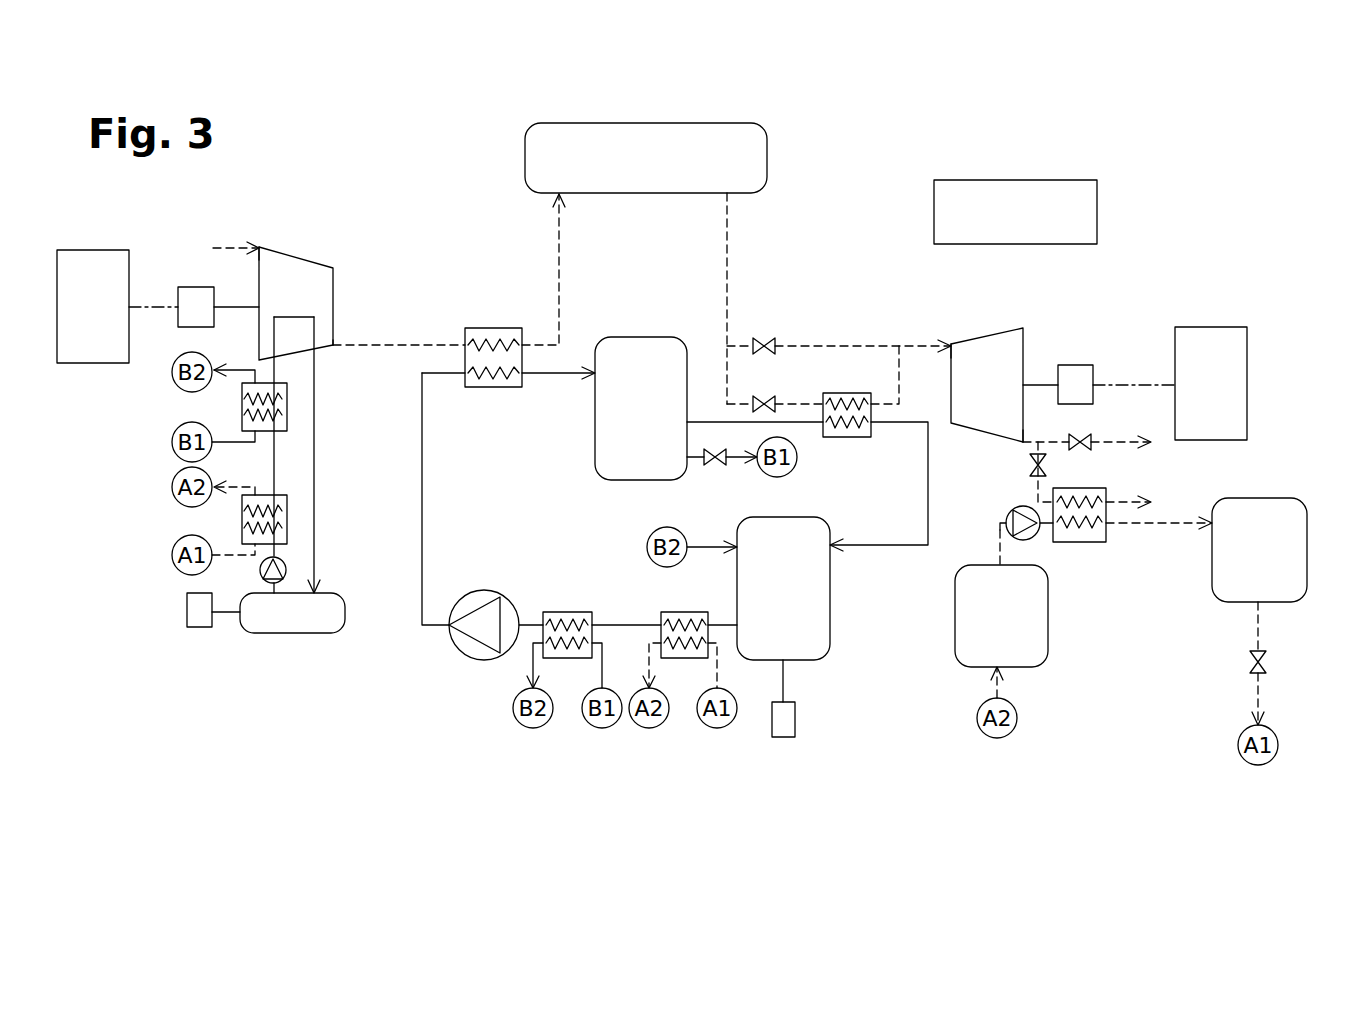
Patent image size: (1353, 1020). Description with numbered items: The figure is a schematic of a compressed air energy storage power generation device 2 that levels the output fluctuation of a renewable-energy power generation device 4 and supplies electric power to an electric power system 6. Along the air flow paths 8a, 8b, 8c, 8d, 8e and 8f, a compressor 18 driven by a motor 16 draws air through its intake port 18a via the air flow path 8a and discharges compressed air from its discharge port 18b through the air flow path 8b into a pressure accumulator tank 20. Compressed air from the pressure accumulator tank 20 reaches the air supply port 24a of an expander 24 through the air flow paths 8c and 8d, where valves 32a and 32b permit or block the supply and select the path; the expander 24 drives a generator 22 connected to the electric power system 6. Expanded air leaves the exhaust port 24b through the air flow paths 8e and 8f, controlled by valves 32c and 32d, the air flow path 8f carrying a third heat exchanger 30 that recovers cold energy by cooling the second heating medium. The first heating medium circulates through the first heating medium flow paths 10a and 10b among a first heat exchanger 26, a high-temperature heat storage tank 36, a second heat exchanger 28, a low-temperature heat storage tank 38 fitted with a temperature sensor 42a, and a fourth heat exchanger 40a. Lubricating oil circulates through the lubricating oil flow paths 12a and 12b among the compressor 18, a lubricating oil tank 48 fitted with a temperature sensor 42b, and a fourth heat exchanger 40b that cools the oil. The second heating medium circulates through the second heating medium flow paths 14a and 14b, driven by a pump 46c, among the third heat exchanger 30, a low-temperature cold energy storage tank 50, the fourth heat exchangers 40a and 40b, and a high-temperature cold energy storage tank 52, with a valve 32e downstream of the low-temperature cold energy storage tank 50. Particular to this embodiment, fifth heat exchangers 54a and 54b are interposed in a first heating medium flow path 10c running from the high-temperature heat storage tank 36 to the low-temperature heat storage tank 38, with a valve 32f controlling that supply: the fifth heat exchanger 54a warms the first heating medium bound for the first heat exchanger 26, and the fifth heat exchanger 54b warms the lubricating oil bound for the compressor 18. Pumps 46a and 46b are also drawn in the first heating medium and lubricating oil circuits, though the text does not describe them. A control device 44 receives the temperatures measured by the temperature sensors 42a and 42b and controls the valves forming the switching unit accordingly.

The compressed air energy storage power generation device 2 is at (310, 165).
The power generation device 4 is at (68, 363).
The electric power system 6 is at (1210, 327).
The air flow path 8a is at (236, 246).
The air flow path 8b is at (559, 278).
The air flow path 8c is at (840, 346).
The air flow path 8d is at (899, 372).
The air flow path 8e is at (1108, 442).
The air flow path 8f is at (1125, 502).
The first heating medium flow path 10a is at (625, 625).
The first heating medium flow path 10b is at (928, 490).
The first heating medium flow path 10c is at (237, 442).
The lubricating oil flow path 12a is at (275, 470).
The lubricating oil flow path 12b is at (315, 430).
The second heating medium flow path 14a is at (1148, 528).
The second heating medium flow path 14b is at (233, 556).
The motor 16 is at (195, 327).
The compressor 18 is at (305, 262).
The intake port 18a is at (262, 247).
The discharge port 18b is at (338, 345).
The pressure accumulator tank 20 is at (767, 152).
The generator 22 is at (1078, 365).
The expander 24 is at (985, 332).
The air supply port 24a is at (955, 345).
The exhaust port 24b is at (1018, 440).
The first heat exchanger 26 is at (500, 387).
The second heat exchanger 28 is at (832, 437).
The third heat exchanger 30 is at (1086, 542).
The valve 32a is at (762, 337).
The valve 32b is at (762, 396).
The valve 32c is at (1082, 434).
The valve 32d is at (1050, 462).
The valve 32e is at (1250, 668).
The valve 32f is at (713, 466).
The high-temperature heat storage tank 36 is at (645, 337).
The low-temperature heat storage tank 38 is at (830, 605).
The fourth heat exchanger 40a is at (680, 612).
The fourth heat exchanger 40b is at (242, 526).
The temperature sensor 42a is at (795, 718).
The temperature sensor 42b is at (187, 612).
The control device 44 is at (1100, 177).
The first pump 46a is at (508, 598).
The second pump 46b is at (286, 566).
The pump 46c is at (1006, 518).
The lubricating oil tank 48 is at (341, 632).
The low-temperature cold energy storage tank 50 is at (1250, 498).
The high-temperature cold energy storage tank 52 is at (1048, 640).
The fifth heat exchanger 54a is at (565, 612).
The fifth heat exchanger 54b is at (242, 415).